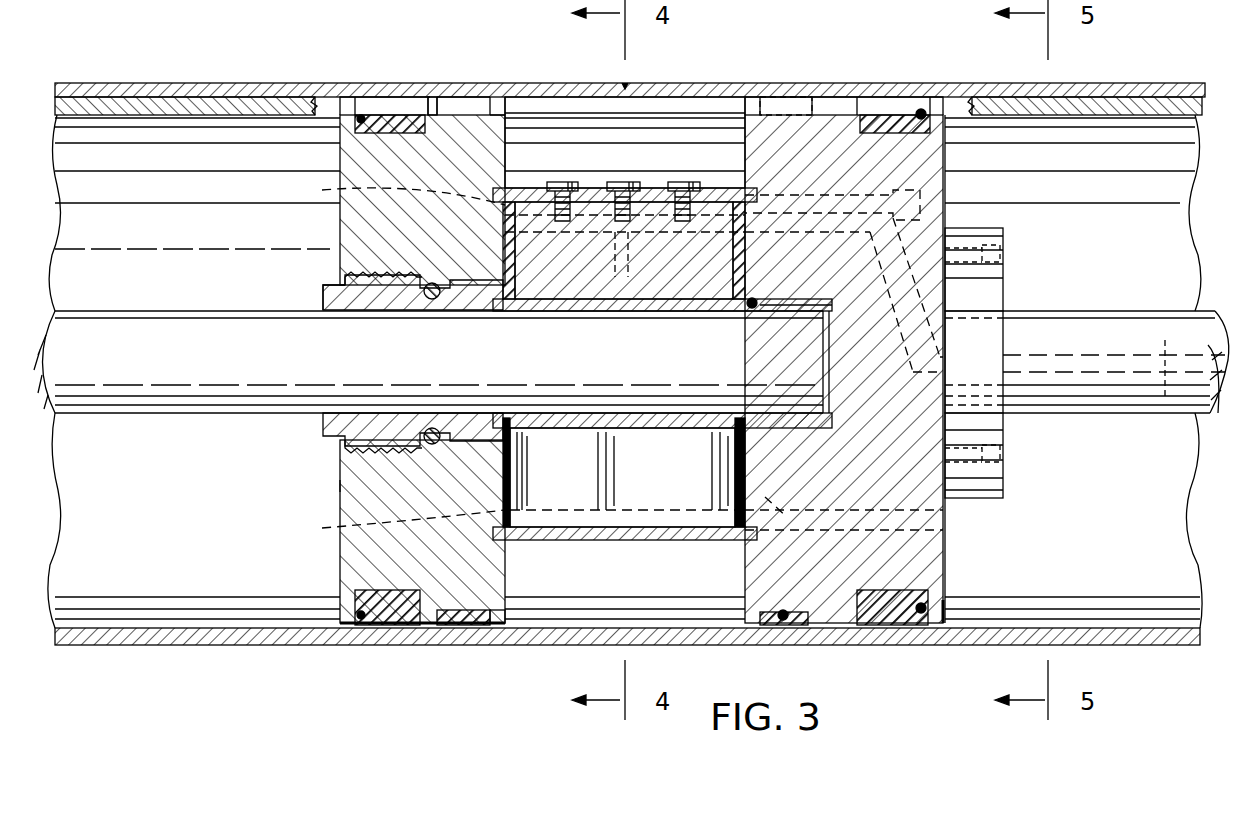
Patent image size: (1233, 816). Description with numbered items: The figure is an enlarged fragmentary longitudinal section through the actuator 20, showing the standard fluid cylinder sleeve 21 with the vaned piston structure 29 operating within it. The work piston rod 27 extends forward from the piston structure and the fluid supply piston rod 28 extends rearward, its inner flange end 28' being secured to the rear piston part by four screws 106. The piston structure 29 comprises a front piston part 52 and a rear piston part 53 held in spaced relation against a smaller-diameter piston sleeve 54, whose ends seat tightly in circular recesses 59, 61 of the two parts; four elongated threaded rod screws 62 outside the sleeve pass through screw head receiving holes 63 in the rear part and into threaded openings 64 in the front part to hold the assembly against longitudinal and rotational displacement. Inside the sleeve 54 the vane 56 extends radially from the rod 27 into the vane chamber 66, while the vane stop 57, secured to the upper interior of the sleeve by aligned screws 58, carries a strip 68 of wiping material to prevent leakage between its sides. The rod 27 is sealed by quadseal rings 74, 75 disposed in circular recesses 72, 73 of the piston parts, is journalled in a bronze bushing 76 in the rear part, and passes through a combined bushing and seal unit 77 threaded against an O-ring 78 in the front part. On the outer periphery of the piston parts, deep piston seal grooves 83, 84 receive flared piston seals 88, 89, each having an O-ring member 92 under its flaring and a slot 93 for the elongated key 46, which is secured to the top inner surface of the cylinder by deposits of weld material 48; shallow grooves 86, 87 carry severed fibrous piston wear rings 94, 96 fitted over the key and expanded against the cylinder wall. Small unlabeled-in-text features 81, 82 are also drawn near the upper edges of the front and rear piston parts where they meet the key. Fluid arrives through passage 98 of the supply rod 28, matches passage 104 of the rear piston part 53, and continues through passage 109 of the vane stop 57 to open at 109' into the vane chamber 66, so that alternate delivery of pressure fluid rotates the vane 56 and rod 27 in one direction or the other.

The actuator 20 is at (300, 68).
The fluid cylinder sleeve 21 is at (262, 632).
The work piston rod 27 is at (112, 368).
The fluid supply piston rod 28 is at (1116, 362).
The inner flange end of the piston rod 28' is at (1007, 335).
The vaned piston structure 29 is at (328, 482).
The elongated key 46 is at (568, 105).
The weld material 48 is at (625, 86).
The front piston part 52 is at (370, 548).
The rear piston part 53 is at (905, 565).
The piston sleeve 54 is at (652, 542).
The vane 56 is at (671, 467).
The vane stop 57 is at (697, 250).
The screws 58 is at (682, 186).
The circular recess 59 is at (512, 540).
The circular recess 61 is at (735, 538).
The threaded rod screws 62 is at (722, 490).
The screw head receiving holes 63 is at (945, 200).
The threaded openings 64 is at (397, 357).
The vane chamber 66 is at (578, 526).
The strip of wiping material 68 is at (600, 307).
The circular recess 72 is at (497, 300).
The circular recess 73 is at (770, 307).
The quadseal ring 74 is at (504, 300).
The quadseal ring 75 is at (753, 305).
The bronze bushing 76 is at (797, 307).
The combined bushing and seal unit 77 is at (330, 420).
The O-ring 78 is at (440, 311).
The slot 81 is at (428, 95).
The slot 82 is at (840, 110).
The deep piston seal groove 83 is at (360, 626).
The deep piston seal groove 84 is at (880, 627).
The shallow piston wear ring groove 86 is at (478, 627).
The shallow piston wear ring groove 87 is at (778, 627).
The flared piston seal 88 is at (385, 627).
The flared piston seal 89 is at (895, 627).
The O-ring member 92 is at (937, 627).
The slot 93 is at (385, 95).
The piston wear ring 94 is at (450, 627).
The piston wear ring 96 is at (783, 627).
The passage 98 is at (1165, 345).
The passage 104 is at (1003, 297).
The screws 106 is at (1003, 248).
The passage 109 is at (625, 189).
The vane stop face opening 109' is at (653, 304).